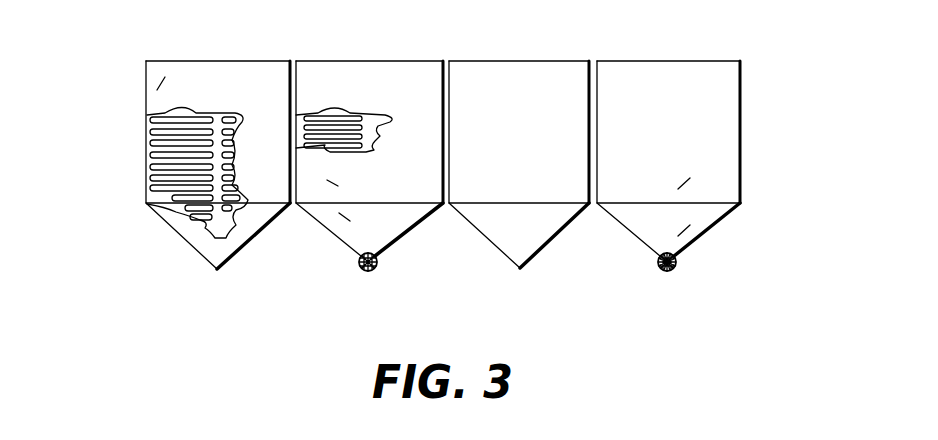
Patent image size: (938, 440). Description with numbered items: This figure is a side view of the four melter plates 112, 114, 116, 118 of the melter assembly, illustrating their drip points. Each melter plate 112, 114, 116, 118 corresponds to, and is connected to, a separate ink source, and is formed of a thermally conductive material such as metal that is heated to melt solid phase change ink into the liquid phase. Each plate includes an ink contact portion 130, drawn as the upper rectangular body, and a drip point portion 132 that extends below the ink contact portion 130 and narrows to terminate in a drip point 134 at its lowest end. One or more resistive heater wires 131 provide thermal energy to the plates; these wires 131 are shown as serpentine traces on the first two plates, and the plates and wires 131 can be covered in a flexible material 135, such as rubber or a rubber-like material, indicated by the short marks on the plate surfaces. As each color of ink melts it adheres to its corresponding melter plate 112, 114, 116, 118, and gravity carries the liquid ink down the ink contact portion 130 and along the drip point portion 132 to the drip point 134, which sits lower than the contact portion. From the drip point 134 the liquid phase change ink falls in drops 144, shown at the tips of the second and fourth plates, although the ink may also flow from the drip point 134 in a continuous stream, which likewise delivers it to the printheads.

The melter plate 112 is at (205, 52).
The melter plate 114 is at (369, 52).
The melter plate 116 is at (521, 52).
The melter plate 118 is at (668, 52).
The ink contact portion 130 is at (146, 130).
The resistive heater wires 131 is at (152, 210).
The drip point portion 132 is at (183, 238).
The drip point 134 is at (219, 276).
The flexible material 135 is at (157, 89).
The drops 144 is at (358, 263).